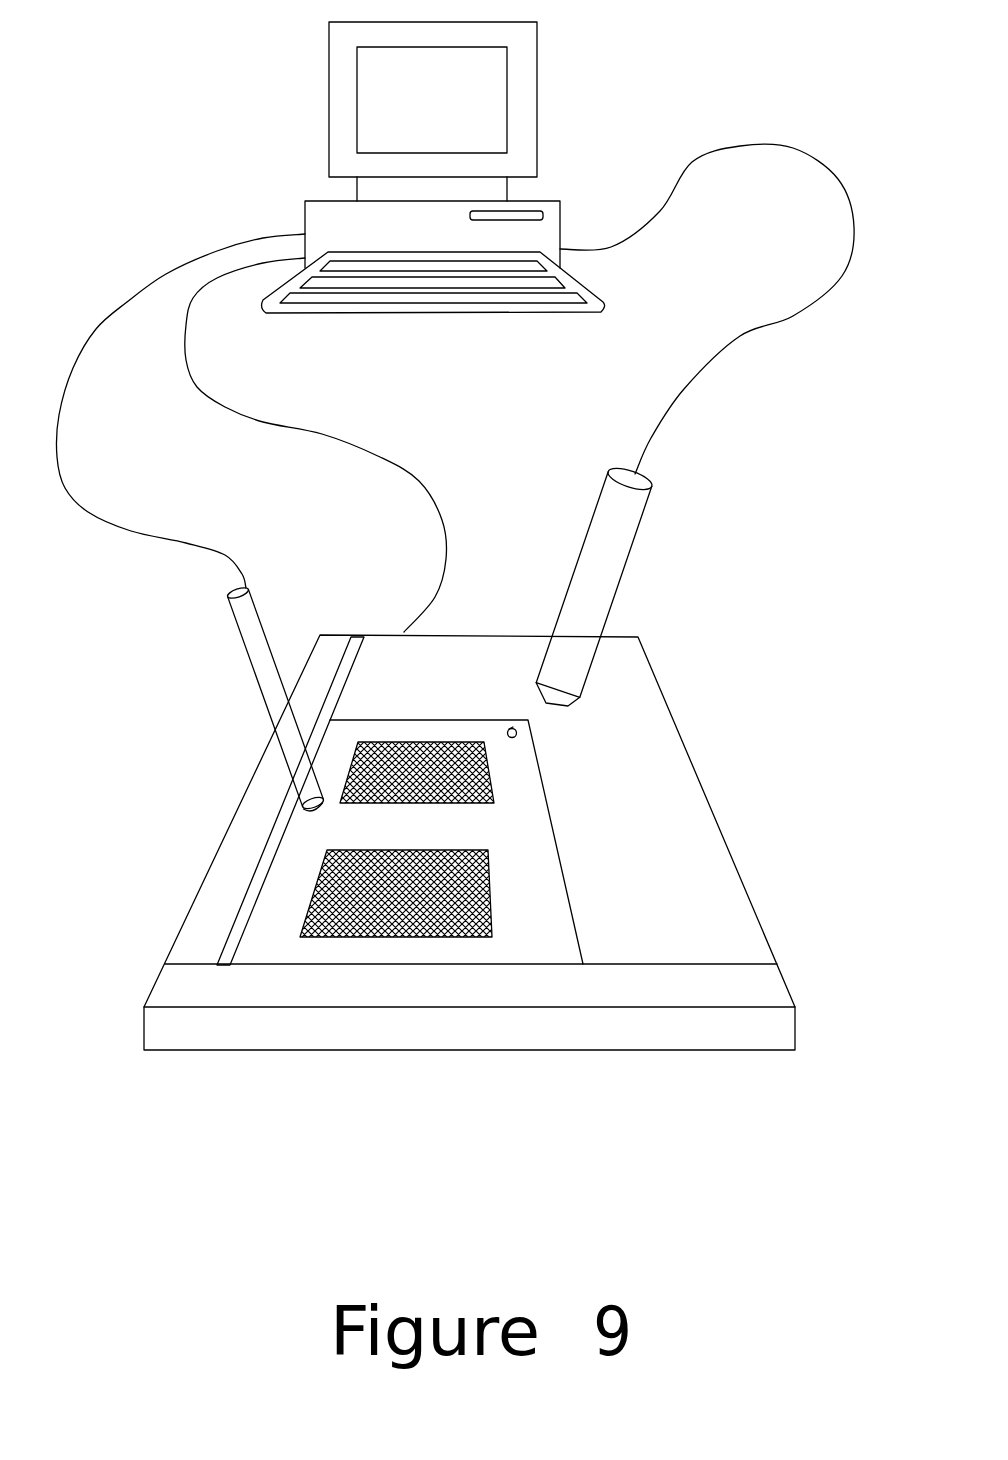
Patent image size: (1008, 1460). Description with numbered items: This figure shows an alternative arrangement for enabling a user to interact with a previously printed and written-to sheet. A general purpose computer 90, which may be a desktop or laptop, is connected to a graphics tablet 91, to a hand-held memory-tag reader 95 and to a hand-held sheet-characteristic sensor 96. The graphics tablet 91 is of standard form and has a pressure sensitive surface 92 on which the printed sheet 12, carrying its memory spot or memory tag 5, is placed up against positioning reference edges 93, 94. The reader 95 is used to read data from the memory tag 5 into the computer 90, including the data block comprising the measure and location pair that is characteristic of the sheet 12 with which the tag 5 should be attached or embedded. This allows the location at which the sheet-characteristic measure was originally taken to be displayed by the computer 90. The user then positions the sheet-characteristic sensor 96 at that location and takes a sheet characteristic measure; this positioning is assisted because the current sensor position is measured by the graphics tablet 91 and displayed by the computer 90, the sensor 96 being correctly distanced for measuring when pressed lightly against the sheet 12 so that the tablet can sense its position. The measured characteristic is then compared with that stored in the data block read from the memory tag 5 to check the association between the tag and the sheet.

The general purpose computer 90 is at (327, 220).
The graphics tablet 91 is at (479, 654).
The pressure sensitive surface 92 is at (682, 784).
The positioning reference edge 93 is at (343, 673).
The positioning reference edge 94 is at (709, 962).
The hand-held memory-tag reader 95 is at (605, 557).
The hand-held sheet-characteristic sensor 96 is at (232, 627).
The memory tag 5 is at (519, 735).
The printed sheet 12 is at (562, 877).